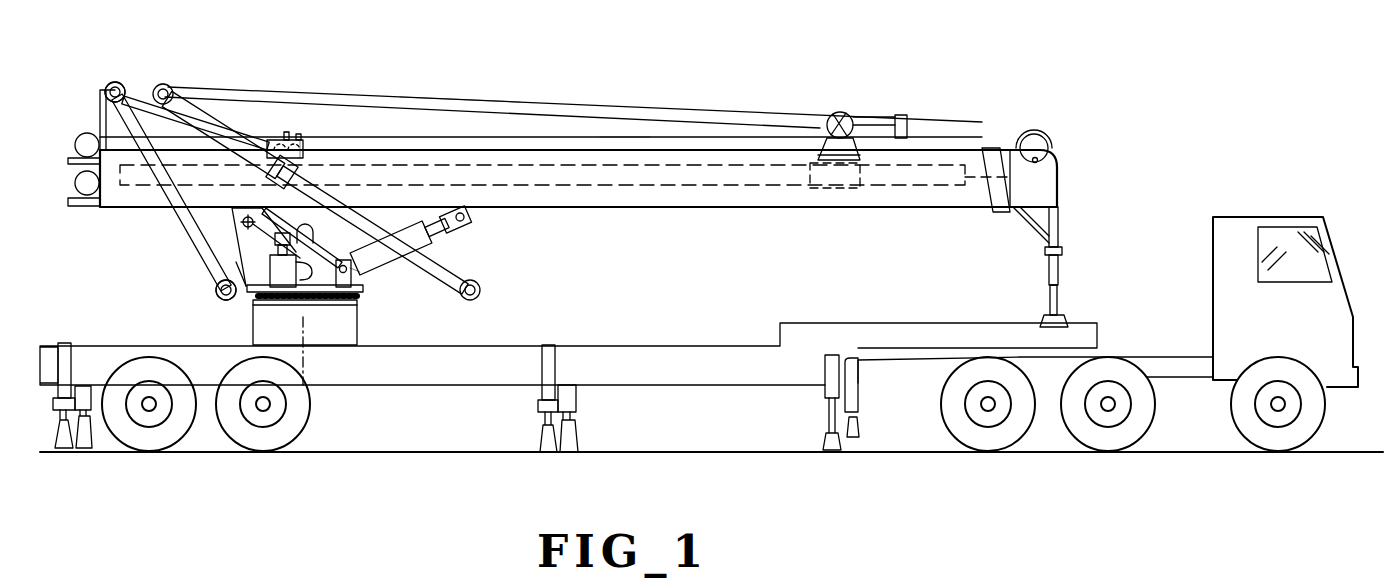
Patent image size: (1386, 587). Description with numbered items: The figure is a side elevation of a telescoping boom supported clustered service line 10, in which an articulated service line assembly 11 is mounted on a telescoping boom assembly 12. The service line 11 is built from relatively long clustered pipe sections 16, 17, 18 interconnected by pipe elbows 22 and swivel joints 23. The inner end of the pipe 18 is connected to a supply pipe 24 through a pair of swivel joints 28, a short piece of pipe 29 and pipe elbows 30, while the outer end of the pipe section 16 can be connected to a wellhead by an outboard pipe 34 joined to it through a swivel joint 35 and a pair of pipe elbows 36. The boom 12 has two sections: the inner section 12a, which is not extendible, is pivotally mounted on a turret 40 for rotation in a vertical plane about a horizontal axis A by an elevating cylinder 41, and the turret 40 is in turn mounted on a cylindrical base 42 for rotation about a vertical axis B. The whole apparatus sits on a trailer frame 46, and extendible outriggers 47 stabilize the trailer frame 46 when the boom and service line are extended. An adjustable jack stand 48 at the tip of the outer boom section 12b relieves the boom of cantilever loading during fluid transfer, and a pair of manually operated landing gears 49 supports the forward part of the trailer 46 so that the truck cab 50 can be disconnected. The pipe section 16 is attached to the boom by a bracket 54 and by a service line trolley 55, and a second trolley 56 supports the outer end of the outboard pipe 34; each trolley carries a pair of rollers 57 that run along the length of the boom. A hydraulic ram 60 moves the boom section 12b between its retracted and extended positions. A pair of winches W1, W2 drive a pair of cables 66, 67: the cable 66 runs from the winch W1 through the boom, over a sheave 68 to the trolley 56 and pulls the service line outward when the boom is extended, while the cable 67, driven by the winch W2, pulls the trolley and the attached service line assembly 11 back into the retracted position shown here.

The telescoping boom supported clustered service line 10 is at (808, 46).
The articulated service line assembly 11 is at (490, 88).
The telescoping boom assembly 12 is at (614, 197).
The inner boom section 12a is at (908, 207).
The outer boom section 12b is at (1060, 172).
The pipe section 16 is at (445, 262).
The pipe section 17 is at (140, 98).
The pipe section 18 is at (160, 208).
The pipe elbows 22 is at (118, 109).
The swivel joints 23 is at (105, 86).
The supply pipe 24 is at (340, 208).
The swivel joints 28 is at (258, 210).
The short piece of pipe 29 is at (235, 270).
The pipe elbows 30 is at (312, 243).
The outboard pipe 34 is at (563, 107).
The swivel joint 35 is at (163, 84).
The pipe elbows 36 is at (174, 98).
The turret 40 is at (245, 252).
The elevating cylinder 41 is at (372, 266).
The cylindrical base 42 is at (357, 324).
The trailer frame 46 is at (795, 323).
The extendible outriggers 47 is at (66, 448).
The adjustable jack stand 48 is at (1060, 266).
The landing gears 49 is at (845, 434).
The truck cab 50 is at (1225, 311).
The bracket 54 is at (303, 165).
The service line trolley 55 is at (286, 132).
The second trolley 56 is at (840, 112).
The rollers 57 is at (820, 180).
The hydraulic ram 60 is at (590, 185).
The cable 66 is at (930, 150).
The cable 67 is at (625, 137).
The sheave 68 is at (1046, 143).
The winch W1 is at (74, 184).
The winch W2 is at (74, 146).
The horizontal axis A is at (245, 224).
The vertical axis B is at (312, 357).